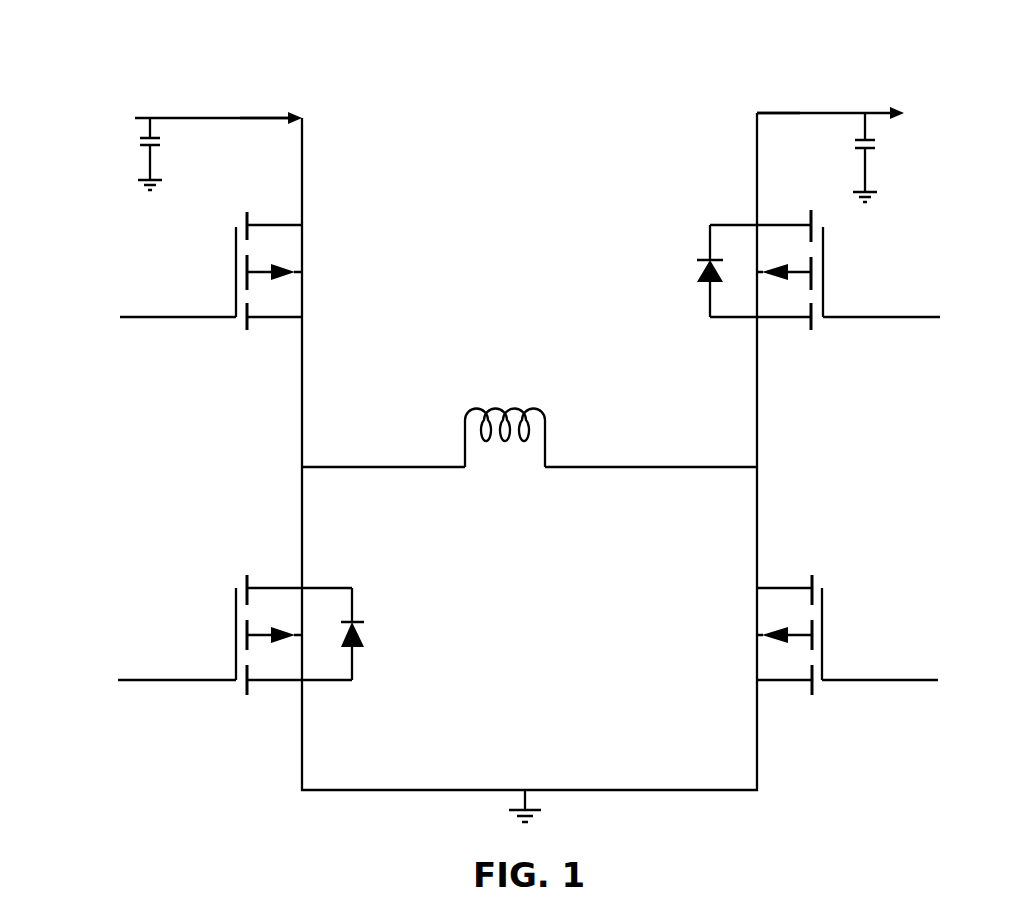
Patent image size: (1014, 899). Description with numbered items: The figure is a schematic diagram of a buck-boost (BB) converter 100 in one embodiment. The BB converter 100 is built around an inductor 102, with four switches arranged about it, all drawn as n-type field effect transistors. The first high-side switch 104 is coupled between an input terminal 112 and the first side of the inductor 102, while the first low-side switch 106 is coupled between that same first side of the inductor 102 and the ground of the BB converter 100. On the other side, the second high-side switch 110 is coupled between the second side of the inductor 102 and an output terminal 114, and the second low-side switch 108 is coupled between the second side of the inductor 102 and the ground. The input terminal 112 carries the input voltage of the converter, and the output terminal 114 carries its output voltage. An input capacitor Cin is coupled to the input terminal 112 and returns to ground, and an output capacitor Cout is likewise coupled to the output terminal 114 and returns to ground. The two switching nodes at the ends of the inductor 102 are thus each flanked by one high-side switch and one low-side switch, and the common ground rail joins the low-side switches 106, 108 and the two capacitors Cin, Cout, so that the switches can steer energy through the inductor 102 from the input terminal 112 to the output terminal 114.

The BB converter 100 is at (102, 76).
The inductor 102 is at (465, 420).
The first high-side switch 104 is at (236, 259).
The first low-side switch 106 is at (236, 607).
The second low-side switch 108 is at (823, 632).
The second high-side switch 110 is at (824, 266).
The input terminal 112 is at (258, 118).
The output terminal 114 is at (757, 113).
The input capacitor Cin is at (140, 145).
The output capacitor Cout is at (853, 147).